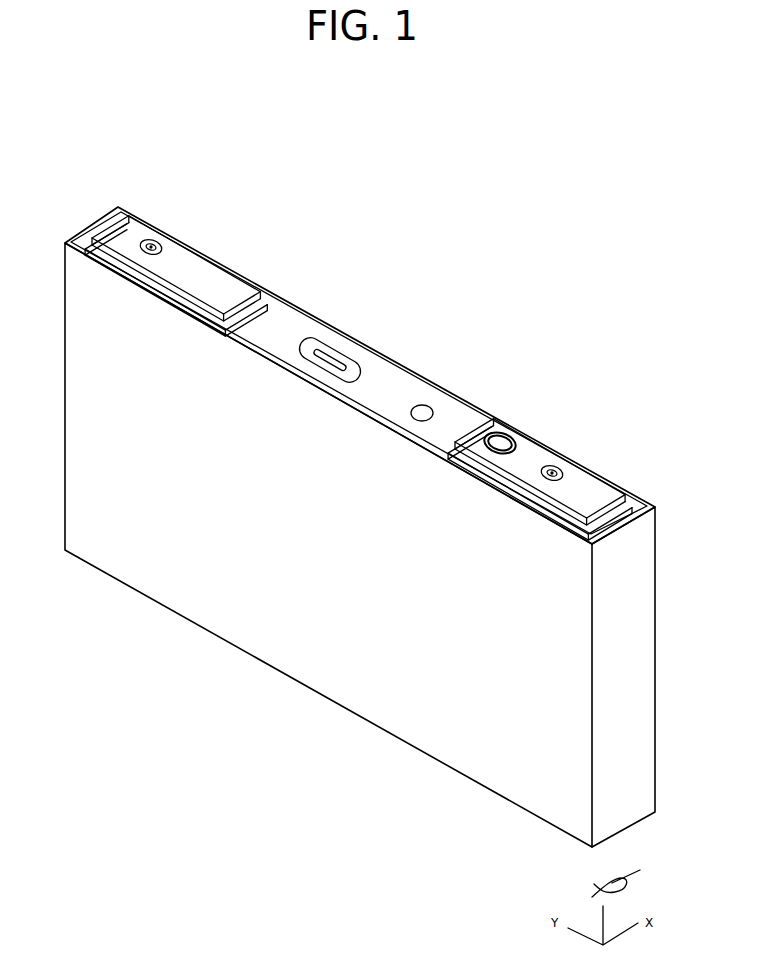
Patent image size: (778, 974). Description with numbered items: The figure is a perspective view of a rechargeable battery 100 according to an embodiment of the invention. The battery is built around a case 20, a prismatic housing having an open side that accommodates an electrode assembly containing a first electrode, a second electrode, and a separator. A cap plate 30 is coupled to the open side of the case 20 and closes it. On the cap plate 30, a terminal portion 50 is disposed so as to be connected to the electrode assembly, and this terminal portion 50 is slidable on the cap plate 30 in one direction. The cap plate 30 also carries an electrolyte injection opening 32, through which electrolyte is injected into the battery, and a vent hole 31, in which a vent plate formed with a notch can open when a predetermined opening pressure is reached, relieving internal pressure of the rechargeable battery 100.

The rechargeable battery 100 is at (441, 160).
The case 20 is at (273, 635).
The cap plate 30 is at (406, 364).
The vent hole 31 is at (326, 341).
The electrolyte injection opening 32 is at (427, 404).
The terminal portion 50 is at (202, 247).